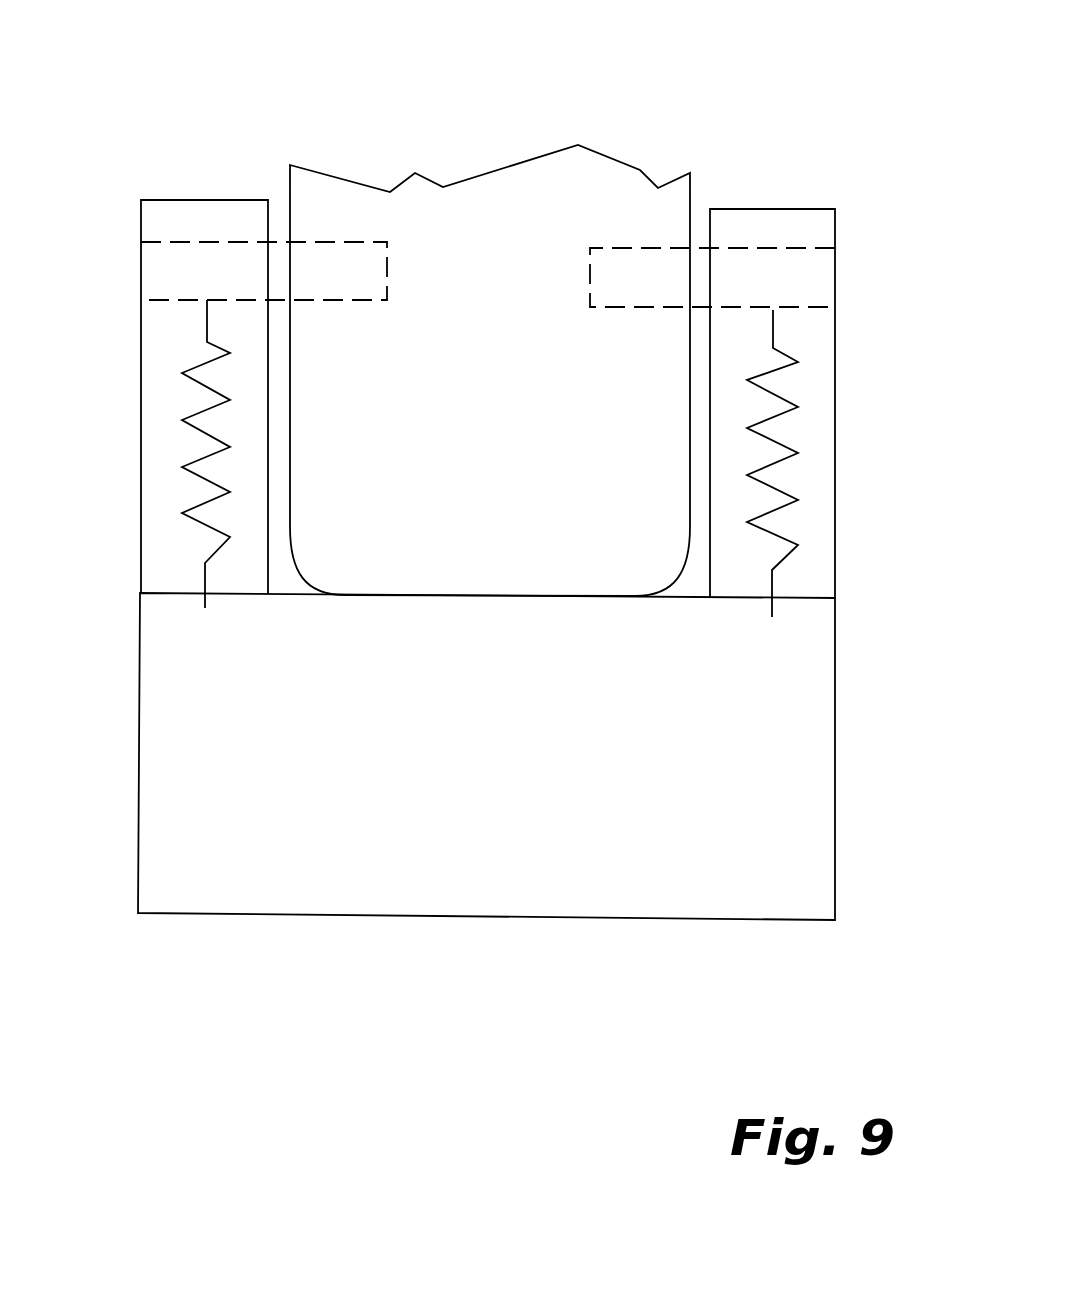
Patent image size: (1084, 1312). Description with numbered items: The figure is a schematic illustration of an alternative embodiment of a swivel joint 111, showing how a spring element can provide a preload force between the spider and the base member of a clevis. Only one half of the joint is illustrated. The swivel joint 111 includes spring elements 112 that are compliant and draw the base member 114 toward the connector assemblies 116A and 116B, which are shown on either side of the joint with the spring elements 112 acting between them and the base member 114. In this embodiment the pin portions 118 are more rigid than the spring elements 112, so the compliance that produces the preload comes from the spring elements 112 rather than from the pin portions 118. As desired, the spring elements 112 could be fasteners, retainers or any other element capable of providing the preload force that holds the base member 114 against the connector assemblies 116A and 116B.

The swivel joint 111 is at (845, 134).
The spring elements 112 is at (200, 570).
The base member 114 is at (137, 795).
The connector assembly 116A is at (230, 200).
The connector assembly 116B is at (798, 209).
The pin portions 118 is at (278, 238).